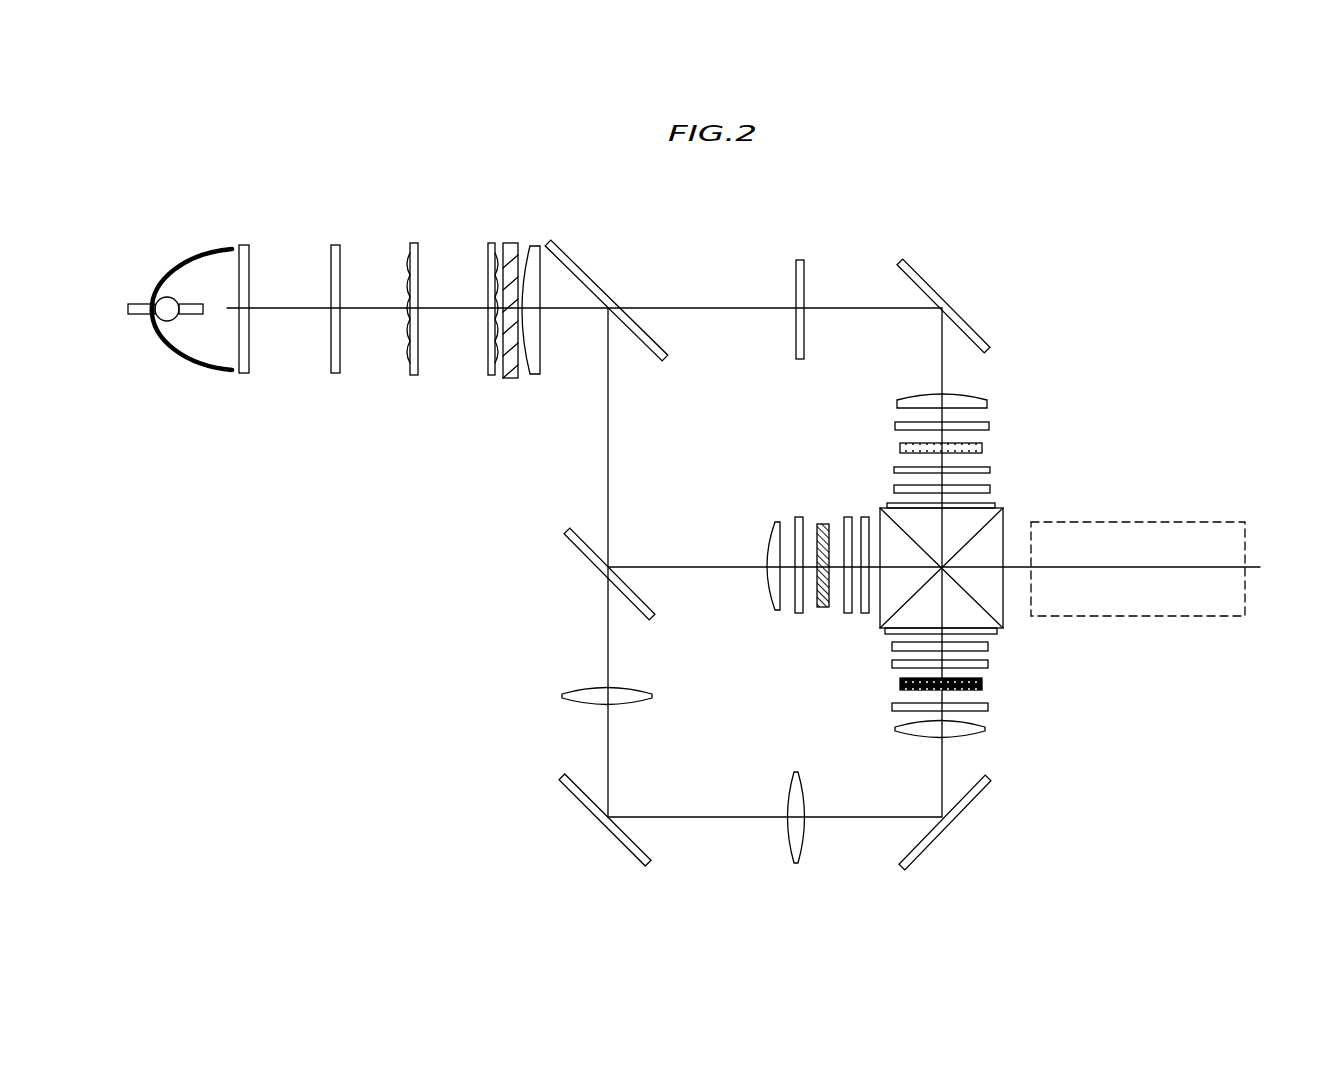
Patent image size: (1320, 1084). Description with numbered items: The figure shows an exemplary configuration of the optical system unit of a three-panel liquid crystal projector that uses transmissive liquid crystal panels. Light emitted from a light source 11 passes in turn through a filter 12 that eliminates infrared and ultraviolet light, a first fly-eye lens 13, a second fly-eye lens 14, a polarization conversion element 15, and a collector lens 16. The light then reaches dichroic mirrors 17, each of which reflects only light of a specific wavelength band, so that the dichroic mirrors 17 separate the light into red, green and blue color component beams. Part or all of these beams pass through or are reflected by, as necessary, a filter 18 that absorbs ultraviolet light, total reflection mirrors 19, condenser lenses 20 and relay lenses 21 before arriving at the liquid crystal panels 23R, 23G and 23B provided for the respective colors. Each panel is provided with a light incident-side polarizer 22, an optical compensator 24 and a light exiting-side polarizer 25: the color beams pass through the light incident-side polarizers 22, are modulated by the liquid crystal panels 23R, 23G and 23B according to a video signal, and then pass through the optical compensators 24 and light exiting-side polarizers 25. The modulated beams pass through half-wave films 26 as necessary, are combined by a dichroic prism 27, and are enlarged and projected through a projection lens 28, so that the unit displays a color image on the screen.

The light source 11 is at (195, 385).
The filter 12 is at (330, 385).
The first fly-eye lens 13 is at (412, 385).
The second fly-eye lens 14 is at (490, 385).
The polarization conversion element 15 is at (512, 232).
The collector lens 16 is at (533, 385).
The dichroic mirror 17 is at (592, 262).
The filter 18 is at (800, 245).
The total reflection mirror 19 is at (940, 285).
The condenser lens 20 is at (988, 388).
The relay lens 21 is at (550, 690).
The light incident-side polarizer 22 is at (992, 420).
The liquid crystal panel 23B is at (992, 443).
The liquid crystal panel 23G is at (815, 517).
The liquid crystal panel 23R is at (893, 680).
The optical compensator 24 is at (995, 468).
The light exiting-side polarizer 25 is at (995, 489).
The half-wave film 26 is at (890, 497).
The dichroic prism 27 is at (1005, 622).
The projection lens 28 is at (1160, 622).